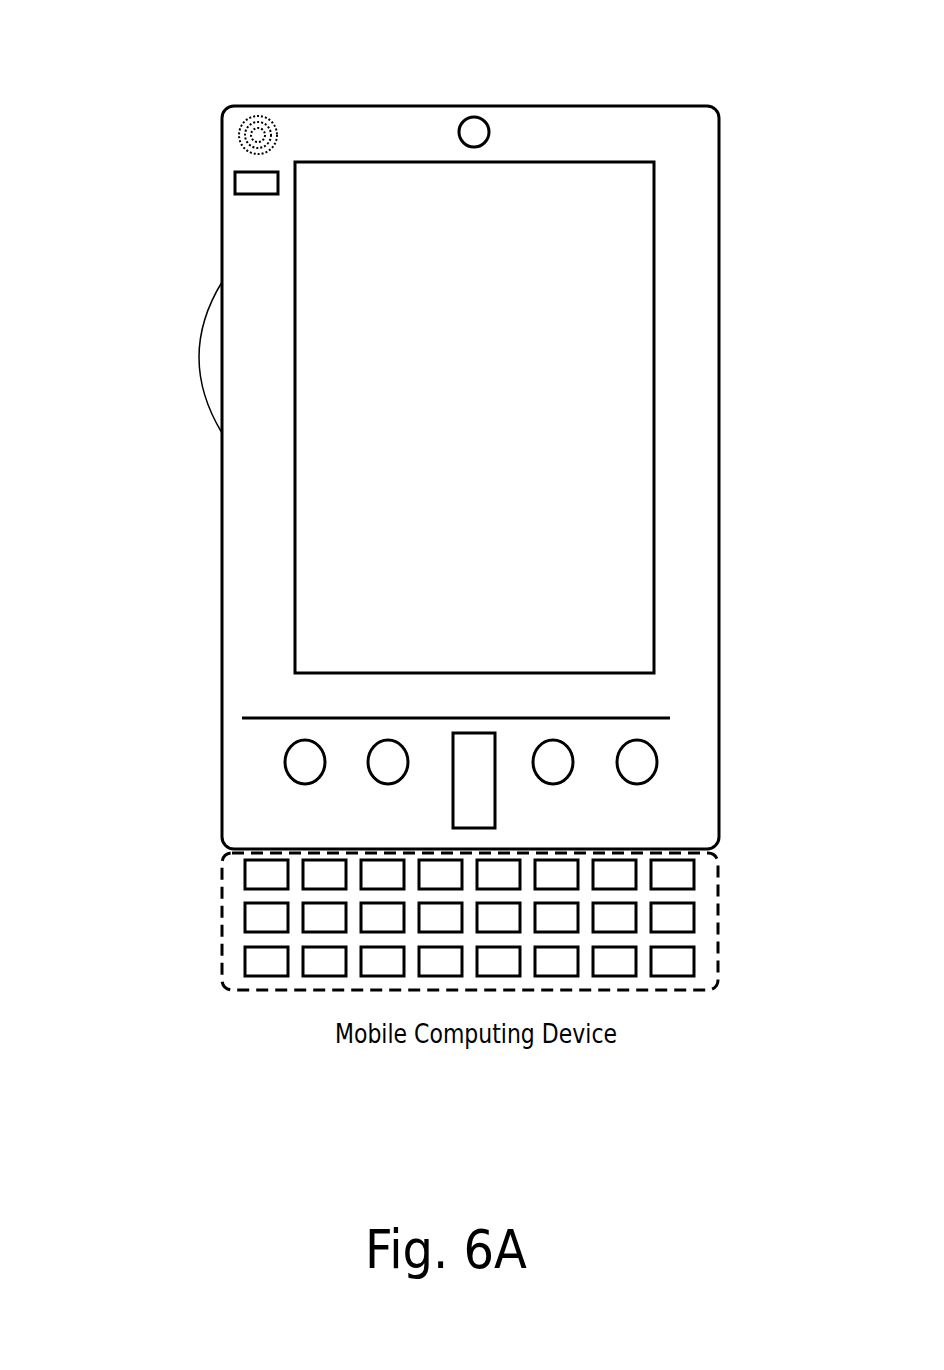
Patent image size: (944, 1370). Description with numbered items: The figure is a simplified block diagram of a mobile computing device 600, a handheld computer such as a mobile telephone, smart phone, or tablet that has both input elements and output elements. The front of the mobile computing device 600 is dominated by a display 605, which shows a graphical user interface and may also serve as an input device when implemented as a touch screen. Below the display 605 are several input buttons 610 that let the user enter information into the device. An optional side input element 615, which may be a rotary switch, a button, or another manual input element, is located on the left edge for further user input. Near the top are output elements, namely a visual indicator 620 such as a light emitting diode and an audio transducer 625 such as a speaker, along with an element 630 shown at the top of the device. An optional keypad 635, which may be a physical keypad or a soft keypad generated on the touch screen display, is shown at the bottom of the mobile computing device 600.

The mobile computing device 600 is at (705, 126).
The display 605 is at (305, 580).
The input buttons 610 is at (473, 787).
The side input element 615 is at (212, 356).
The visual indicator 620 is at (235, 188).
The audio transducer 625 is at (235, 135).
The camera 630 is at (487, 128).
The keypad 635 is at (230, 965).